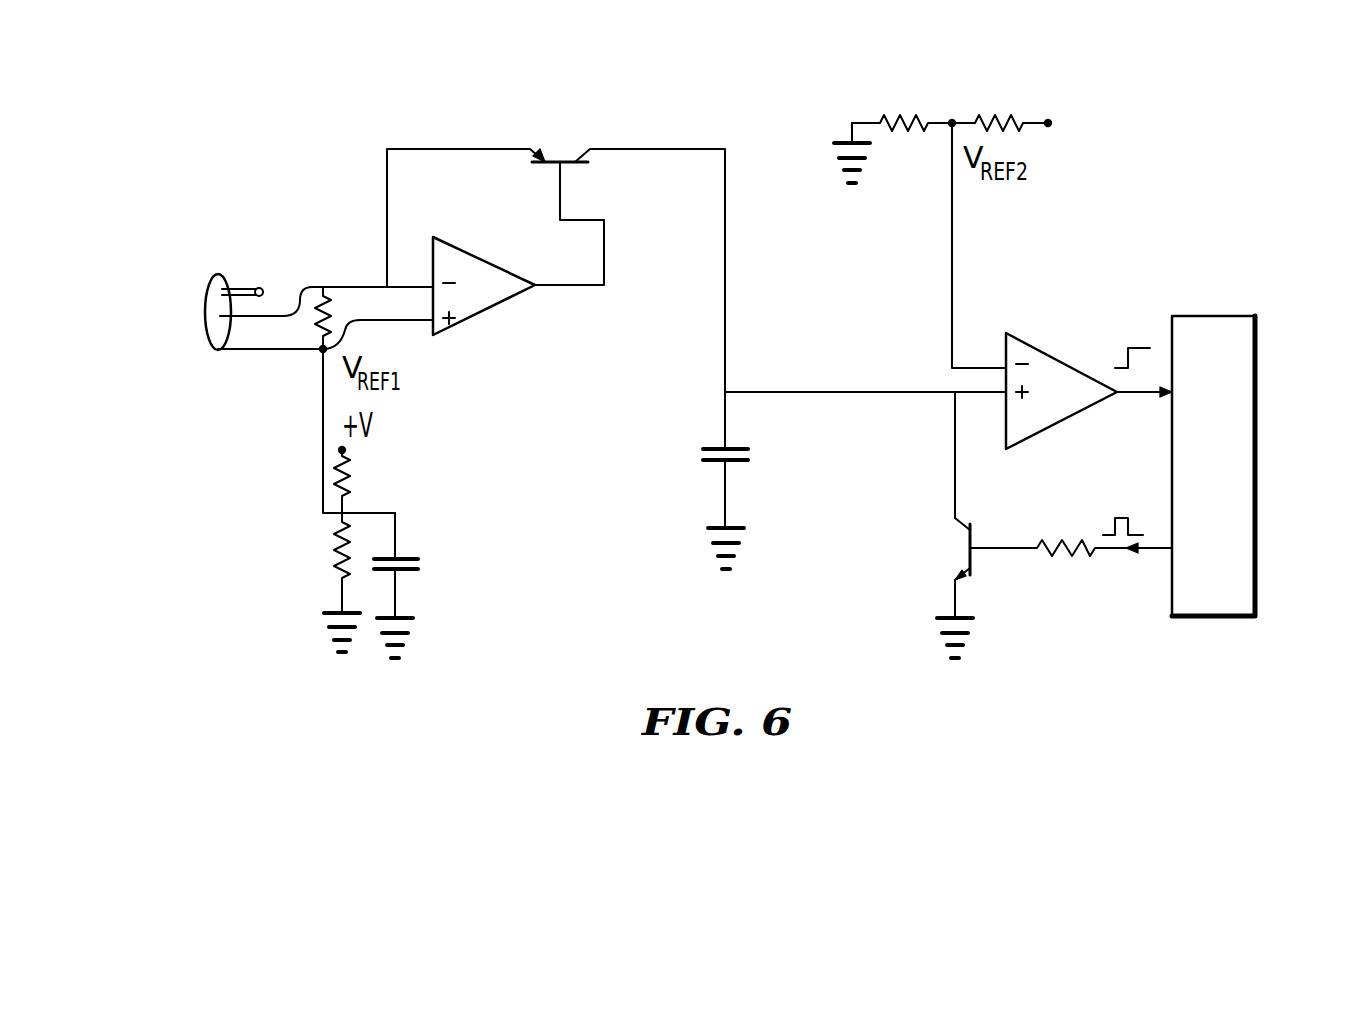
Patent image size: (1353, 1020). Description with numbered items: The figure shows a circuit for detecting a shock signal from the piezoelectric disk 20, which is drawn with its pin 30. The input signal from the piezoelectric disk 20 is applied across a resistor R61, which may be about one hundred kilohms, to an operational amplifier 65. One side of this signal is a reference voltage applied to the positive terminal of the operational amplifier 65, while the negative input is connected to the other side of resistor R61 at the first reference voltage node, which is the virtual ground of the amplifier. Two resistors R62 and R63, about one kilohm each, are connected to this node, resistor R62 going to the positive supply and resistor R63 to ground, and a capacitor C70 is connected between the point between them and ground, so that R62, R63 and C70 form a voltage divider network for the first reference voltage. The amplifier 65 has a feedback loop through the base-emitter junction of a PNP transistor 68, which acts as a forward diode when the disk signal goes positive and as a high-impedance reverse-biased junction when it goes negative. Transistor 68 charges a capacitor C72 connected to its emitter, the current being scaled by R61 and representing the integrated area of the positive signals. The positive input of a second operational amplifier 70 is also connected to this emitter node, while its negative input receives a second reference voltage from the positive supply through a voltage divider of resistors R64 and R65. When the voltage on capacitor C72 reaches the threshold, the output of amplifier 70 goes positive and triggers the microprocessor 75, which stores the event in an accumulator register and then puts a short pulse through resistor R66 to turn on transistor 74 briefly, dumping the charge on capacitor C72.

The piezoelectric disk 20 is at (205, 312).
The probe pin 30 is at (259, 287).
The operational amplifier 65 is at (482, 313).
The PNP transistor 68 is at (572, 165).
The second operational amplifier 70 is at (1072, 363).
The transistor 74 is at (957, 553).
The microprocessor 75 is at (1255, 442).
The resistor R61 is at (350, 318).
The resistor R62 is at (370, 480).
The resistor R63 is at (321, 582).
The resistor R64 is at (1002, 100).
The resistor R65 is at (895, 126).
The resistor R66 is at (1071, 571).
The capacitor C70 is at (422, 585).
The capacitor C72 is at (755, 480).